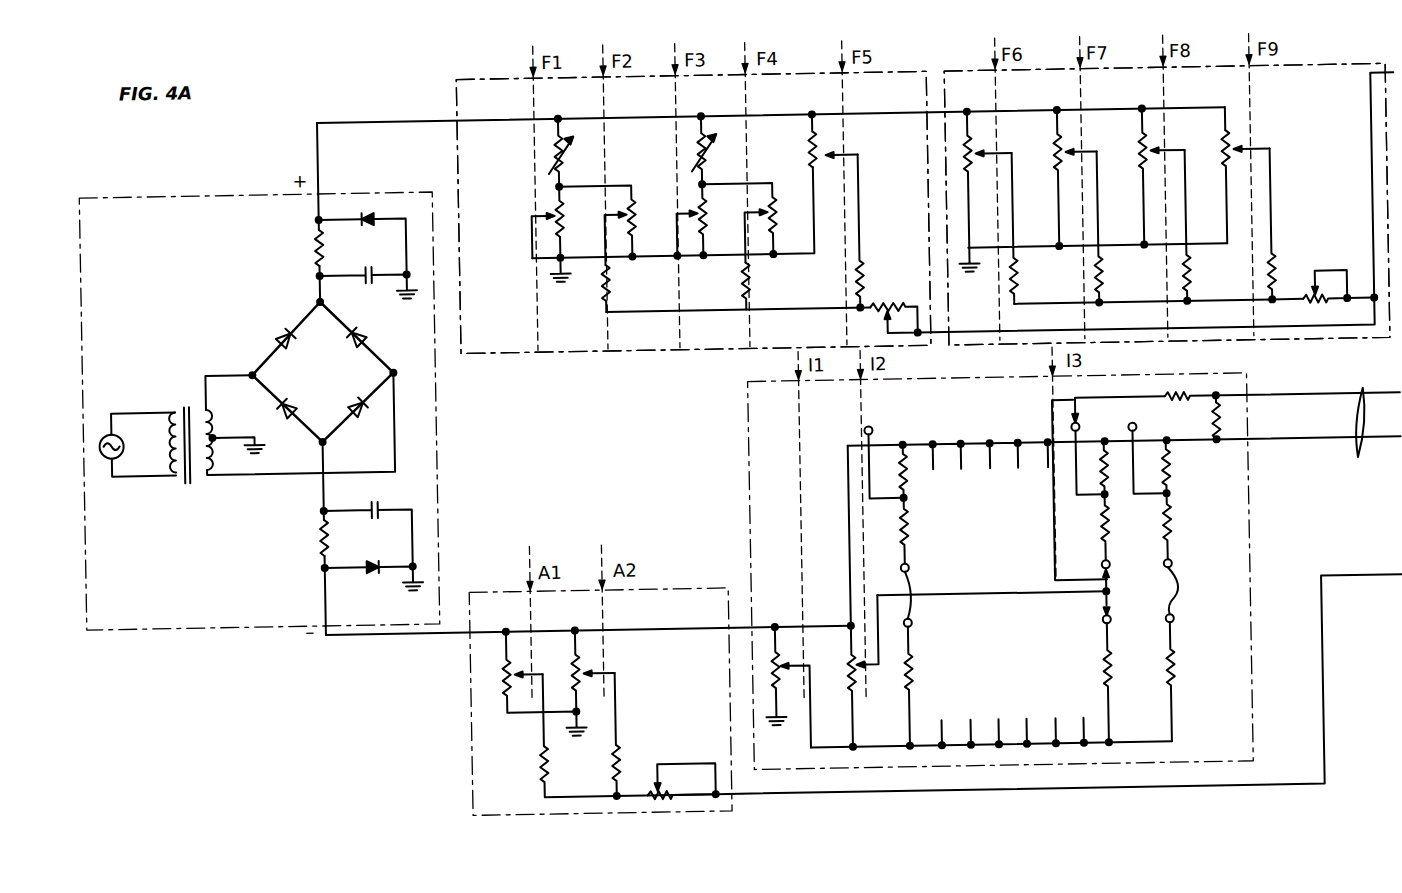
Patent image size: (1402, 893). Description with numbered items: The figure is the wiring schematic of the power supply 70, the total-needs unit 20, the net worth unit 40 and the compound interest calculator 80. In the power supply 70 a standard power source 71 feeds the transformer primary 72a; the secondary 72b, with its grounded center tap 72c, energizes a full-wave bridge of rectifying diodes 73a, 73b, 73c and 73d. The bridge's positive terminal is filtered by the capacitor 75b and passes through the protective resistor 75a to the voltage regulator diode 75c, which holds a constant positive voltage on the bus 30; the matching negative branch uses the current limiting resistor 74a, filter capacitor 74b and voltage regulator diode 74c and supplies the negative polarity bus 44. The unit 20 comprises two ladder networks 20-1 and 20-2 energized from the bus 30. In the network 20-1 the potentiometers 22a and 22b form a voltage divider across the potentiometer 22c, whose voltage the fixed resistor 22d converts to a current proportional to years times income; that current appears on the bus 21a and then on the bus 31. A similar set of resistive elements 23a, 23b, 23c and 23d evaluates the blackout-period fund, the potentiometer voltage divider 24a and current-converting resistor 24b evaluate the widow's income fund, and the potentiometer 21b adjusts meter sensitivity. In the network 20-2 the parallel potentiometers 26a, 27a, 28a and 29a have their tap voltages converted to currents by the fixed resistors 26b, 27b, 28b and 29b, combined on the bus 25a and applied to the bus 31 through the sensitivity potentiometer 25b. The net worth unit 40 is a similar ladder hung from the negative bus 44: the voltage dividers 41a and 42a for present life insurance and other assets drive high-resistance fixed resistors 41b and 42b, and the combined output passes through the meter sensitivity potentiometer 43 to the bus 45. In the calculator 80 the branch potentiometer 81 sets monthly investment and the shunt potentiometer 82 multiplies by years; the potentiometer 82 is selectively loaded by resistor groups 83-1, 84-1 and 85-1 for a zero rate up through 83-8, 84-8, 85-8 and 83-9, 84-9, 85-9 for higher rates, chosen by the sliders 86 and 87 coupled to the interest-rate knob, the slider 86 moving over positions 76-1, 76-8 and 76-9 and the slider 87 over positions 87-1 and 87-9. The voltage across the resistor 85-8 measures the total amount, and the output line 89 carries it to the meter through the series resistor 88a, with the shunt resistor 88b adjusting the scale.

The total needs unit 20 is at (948, 73).
The ladder network 20-1 is at (606, 360).
The ladder network 20-2 is at (1310, 356).
The bus 21a is at (715, 324).
The potentiometer 21b is at (887, 312).
The potentiometer 22a is at (568, 172).
The potentiometer 22b is at (543, 216).
The potentiometer 22c is at (649, 208).
The fixed resistor 22d is at (609, 298).
The resistive element 23a is at (708, 170).
The resistive element 23b is at (714, 240).
The resistive element 23c is at (786, 240).
The resistive element 23d is at (751, 296).
The potentiometer voltage divider 24a is at (802, 164).
The current-converting resistor 24b is at (864, 280).
The bus 25a is at (1166, 316).
The potentiometer 25b is at (1294, 323).
The potentiometer 26a is at (986, 159).
The fixed resistor 26b is at (1020, 290).
The potentiometer 27a is at (1073, 160).
The fixed resistor 27b is at (1104, 290).
The potentiometer 28a is at (1161, 160).
The fixed resistor 28b is at (1192, 290).
The potentiometer 29a is at (1244, 159).
The fixed resistor 29b is at (1278, 284).
The bus 30 is at (364, 118).
The bus 31 is at (1380, 76).
The net worth calculator unit 40 is at (461, 742).
The voltage divider potentiometer 41a is at (491, 698).
The fixed resistor 41b is at (517, 762).
The potentiometer 42a is at (582, 673).
The resistor 42b is at (614, 762).
The meter sensitivity adjustment potentiometer 43 is at (666, 789).
The negative polarity bus 44 is at (386, 638).
The bus 45 is at (792, 801).
The power supply 70 is at (160, 626).
The standard power source 71 is at (114, 454).
The transformer primary 72a is at (147, 408).
The transformer secondary 72b is at (208, 412).
The grounded center tap 72c is at (252, 436).
The rectifying diode 73a is at (272, 336).
The rectifying diode 73b is at (364, 336).
The rectifying diode 73c is at (354, 426).
The rectifying diode 73d is at (290, 402).
The current limiting resistor 74a is at (302, 540).
The filter capacitor 74b is at (370, 504).
The voltage regulator diode 74c is at (354, 576).
The protective resistor 75a is at (315, 244).
The capacitor 75b is at (368, 284).
The voltage regulator diode 75c is at (364, 226).
The switch contact 76-1 is at (871, 436).
The switch contact 76-8 is at (1064, 438).
The switch contact 76-9 is at (1132, 437).
The compound interest calculator 80 is at (743, 485).
The branch potentiometer 81 is at (784, 668).
The shunt potentiometer 82 is at (836, 698).
The loading resistor 83-1 is at (907, 692).
The loading resistor 83-8 is at (1087, 682).
The loading resistor 83-9 is at (1170, 684).
The loading resistor 84-1 is at (908, 537).
The loading resistor 84-8 is at (1087, 530).
The loading resistor 84-9 is at (1169, 538).
The loading resistor 85-1 is at (906, 492).
The resistor 85-8 is at (1088, 484).
The loading resistor 85-9 is at (1168, 483).
The slider 86 is at (1080, 412).
The slider 87 is at (1092, 610).
The switch 87-1 is at (904, 578).
The switch 87-9 is at (1174, 596).
The series resistor 88a is at (1156, 406).
The shunt resistor 88b is at (1219, 434).
The output line 89 is at (1356, 435).